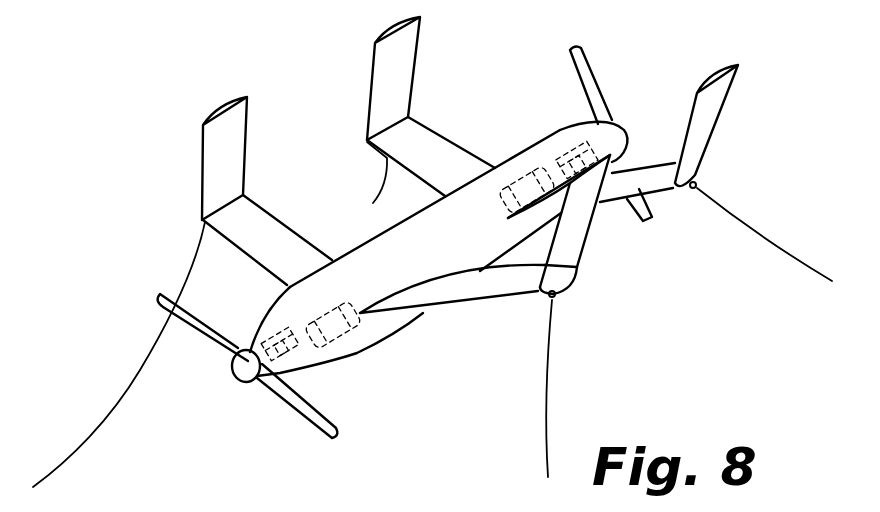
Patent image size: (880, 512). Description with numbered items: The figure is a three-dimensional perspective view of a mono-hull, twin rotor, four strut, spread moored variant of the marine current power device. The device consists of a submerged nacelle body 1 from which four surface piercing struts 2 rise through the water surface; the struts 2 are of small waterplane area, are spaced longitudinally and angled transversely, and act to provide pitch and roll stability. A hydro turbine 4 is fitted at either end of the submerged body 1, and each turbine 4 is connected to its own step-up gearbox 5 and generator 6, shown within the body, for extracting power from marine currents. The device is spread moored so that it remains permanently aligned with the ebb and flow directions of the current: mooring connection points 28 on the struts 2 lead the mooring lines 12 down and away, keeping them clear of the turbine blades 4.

The submerged nacelle body 1 is at (360, 358).
The surface piercing strut 2 is at (203, 172).
The hydro turbine 4 is at (592, 77).
The step-up gearbox 5 is at (566, 150).
The generator 6 is at (500, 200).
The mooring line 12 is at (125, 392).
The mooring connection point 28 is at (570, 280).